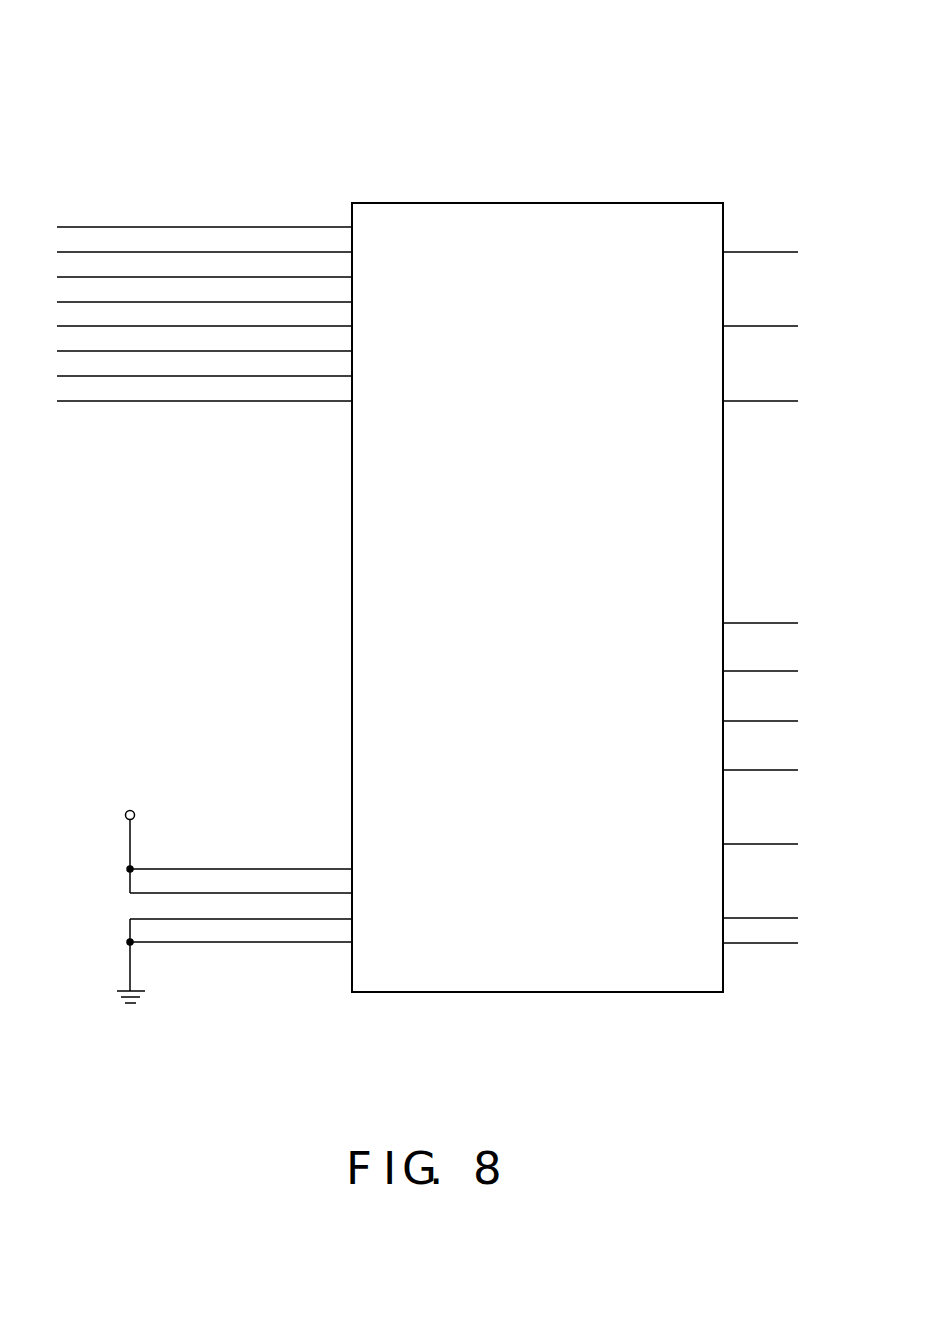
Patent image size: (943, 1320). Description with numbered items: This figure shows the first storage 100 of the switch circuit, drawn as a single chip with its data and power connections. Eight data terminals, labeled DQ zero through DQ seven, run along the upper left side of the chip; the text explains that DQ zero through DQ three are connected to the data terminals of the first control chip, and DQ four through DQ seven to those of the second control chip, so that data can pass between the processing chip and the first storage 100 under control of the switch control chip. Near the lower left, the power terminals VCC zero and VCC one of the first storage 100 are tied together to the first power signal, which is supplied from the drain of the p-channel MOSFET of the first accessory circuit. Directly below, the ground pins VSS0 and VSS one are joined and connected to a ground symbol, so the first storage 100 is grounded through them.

The first storage 100 is at (187, 82).
The ground pin VSS0 is at (276, 954).